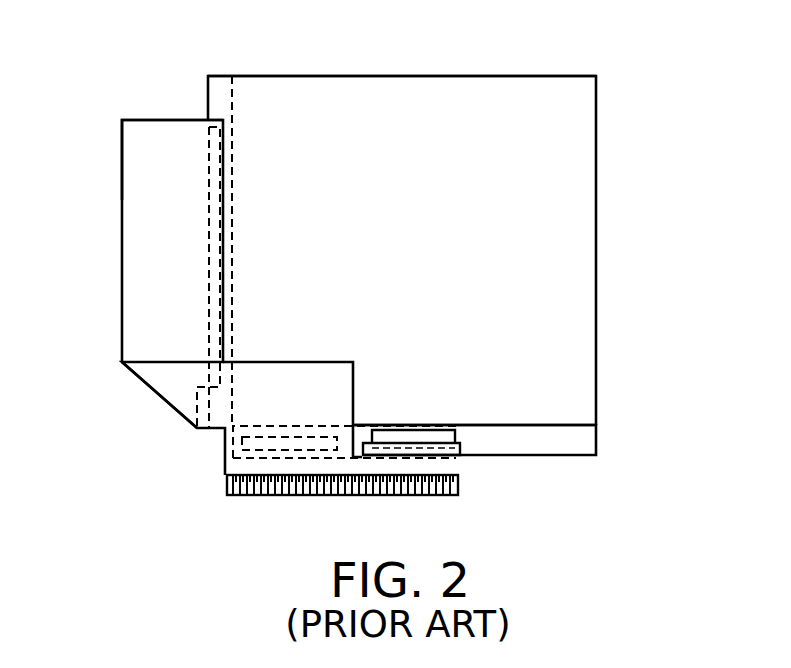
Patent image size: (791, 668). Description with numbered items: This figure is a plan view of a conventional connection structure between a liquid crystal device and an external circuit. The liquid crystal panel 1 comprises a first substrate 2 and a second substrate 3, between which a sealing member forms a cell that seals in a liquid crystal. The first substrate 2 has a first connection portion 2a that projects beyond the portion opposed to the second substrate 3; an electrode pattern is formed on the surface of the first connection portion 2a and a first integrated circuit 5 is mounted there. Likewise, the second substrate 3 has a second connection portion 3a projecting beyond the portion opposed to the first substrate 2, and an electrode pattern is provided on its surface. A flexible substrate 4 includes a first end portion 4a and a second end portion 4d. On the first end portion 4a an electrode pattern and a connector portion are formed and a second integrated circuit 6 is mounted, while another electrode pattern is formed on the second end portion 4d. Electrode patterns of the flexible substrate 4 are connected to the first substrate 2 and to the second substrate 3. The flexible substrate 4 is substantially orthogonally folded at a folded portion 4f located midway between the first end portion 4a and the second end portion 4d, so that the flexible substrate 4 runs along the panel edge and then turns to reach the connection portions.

The liquid crystal panel 1 is at (491, 58).
The first substrate 2 is at (552, 455).
The first connection portion 2a is at (588, 437).
The second substrate 3 is at (203, 86).
The second connection portion 3a is at (214, 112).
The flexible substrate 4 is at (138, 285).
The first end portion 4a is at (233, 469).
The second end portion 4d is at (142, 188).
The inclined portion of frame 4f is at (143, 383).
The first integrated circuit 5 is at (450, 433).
The second integrated circuit 6 is at (234, 435).